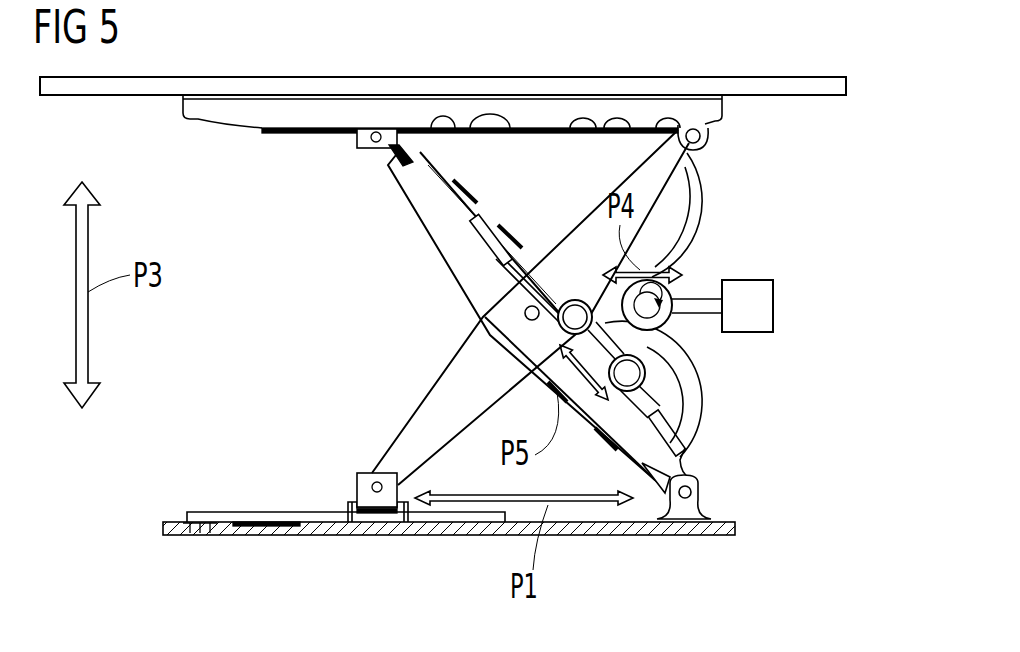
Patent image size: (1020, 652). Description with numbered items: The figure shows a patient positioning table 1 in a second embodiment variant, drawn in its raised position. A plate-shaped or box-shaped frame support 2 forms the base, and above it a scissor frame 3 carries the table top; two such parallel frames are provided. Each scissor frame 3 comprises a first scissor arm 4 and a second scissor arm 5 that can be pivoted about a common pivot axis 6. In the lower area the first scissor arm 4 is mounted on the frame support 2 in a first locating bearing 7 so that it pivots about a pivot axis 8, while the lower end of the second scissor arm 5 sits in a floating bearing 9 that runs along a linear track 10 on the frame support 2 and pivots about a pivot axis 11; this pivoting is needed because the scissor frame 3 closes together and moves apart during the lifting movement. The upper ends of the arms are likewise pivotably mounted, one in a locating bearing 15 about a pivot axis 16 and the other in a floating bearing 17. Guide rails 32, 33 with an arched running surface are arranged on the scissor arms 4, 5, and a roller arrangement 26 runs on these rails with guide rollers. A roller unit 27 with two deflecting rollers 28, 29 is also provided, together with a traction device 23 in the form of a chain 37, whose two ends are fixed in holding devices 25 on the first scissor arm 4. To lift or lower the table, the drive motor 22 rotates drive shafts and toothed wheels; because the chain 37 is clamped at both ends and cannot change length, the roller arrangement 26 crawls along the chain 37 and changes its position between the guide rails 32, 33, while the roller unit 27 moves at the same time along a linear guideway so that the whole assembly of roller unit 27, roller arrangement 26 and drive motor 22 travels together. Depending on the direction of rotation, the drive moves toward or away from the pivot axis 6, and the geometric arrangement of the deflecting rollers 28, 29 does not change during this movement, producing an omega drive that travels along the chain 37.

The patient positioning table 1 is at (868, 108).
The frame support 2 is at (455, 535).
The scissor frame 3 is at (355, 376).
The first scissor arm 4 is at (408, 192).
The second scissor arm 5 is at (447, 375).
The pivot axis 6 is at (525, 313).
The first locating bearing 7 is at (676, 510).
The pivot axis 8 is at (700, 490).
The floating bearing 9 is at (381, 130).
The linear track 10 is at (232, 512).
The pivot axis 11 is at (370, 487).
The locating bearing 15 is at (712, 128).
The pivot axis 16 is at (700, 142).
The floating bearing 17 is at (355, 140).
The drive motor 22 is at (775, 307).
The traction device 23 is at (531, 258).
The holding device 25 is at (480, 222).
The roller arrangement 26 is at (712, 264).
The roller unit 27 is at (555, 325).
The deflecting roller 28 is at (578, 305).
The deflecting roller 29 is at (632, 373).
The guide rail 32 is at (692, 222).
The guide rail 33 is at (700, 397).
The chain 37 is at (512, 268).